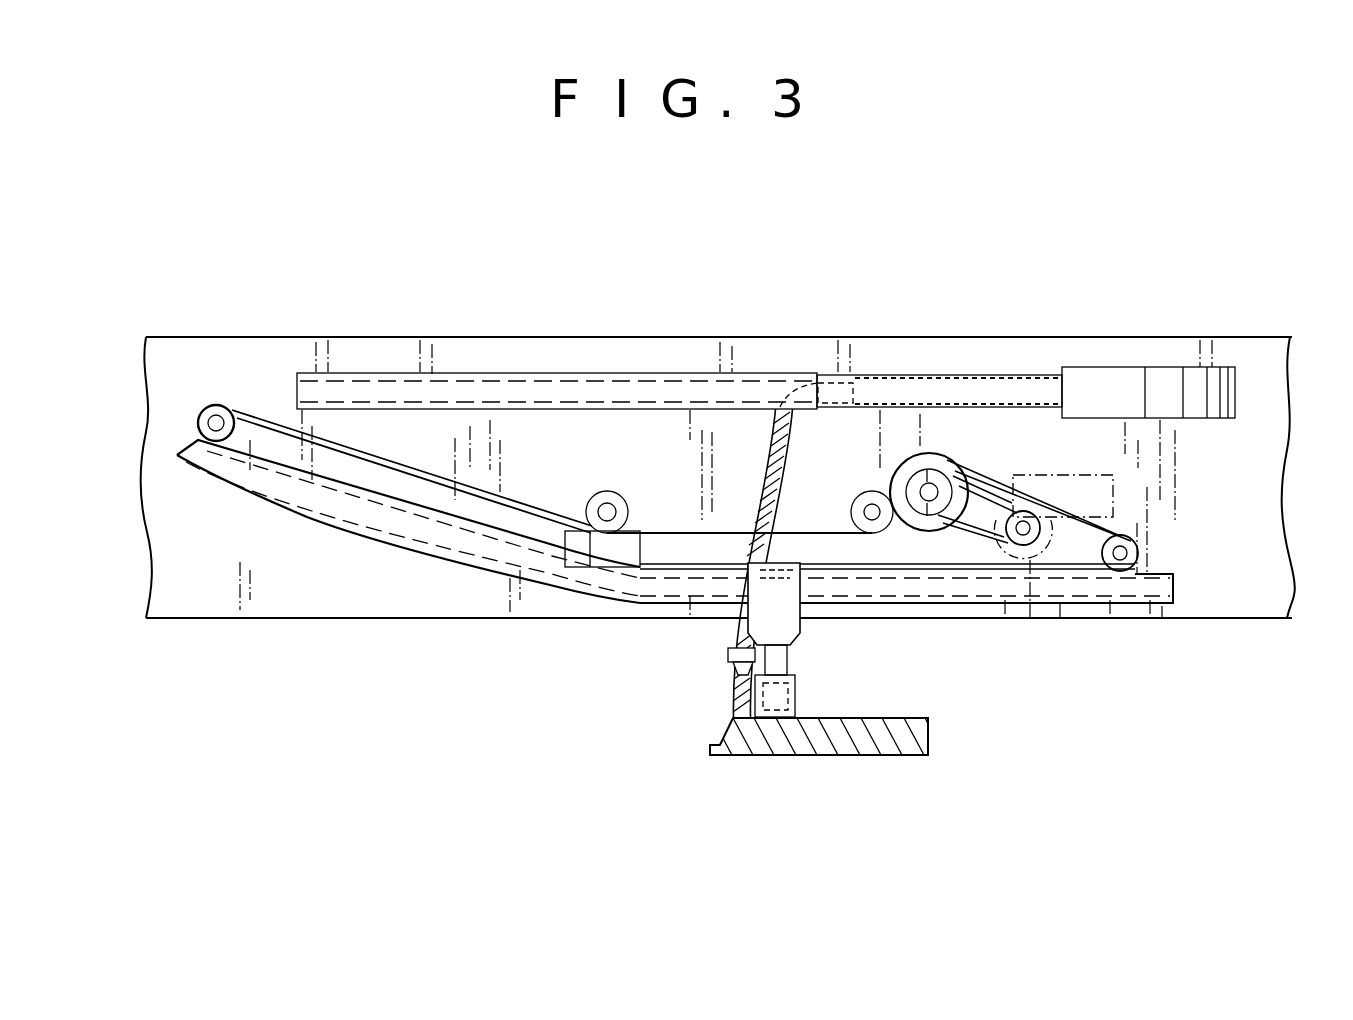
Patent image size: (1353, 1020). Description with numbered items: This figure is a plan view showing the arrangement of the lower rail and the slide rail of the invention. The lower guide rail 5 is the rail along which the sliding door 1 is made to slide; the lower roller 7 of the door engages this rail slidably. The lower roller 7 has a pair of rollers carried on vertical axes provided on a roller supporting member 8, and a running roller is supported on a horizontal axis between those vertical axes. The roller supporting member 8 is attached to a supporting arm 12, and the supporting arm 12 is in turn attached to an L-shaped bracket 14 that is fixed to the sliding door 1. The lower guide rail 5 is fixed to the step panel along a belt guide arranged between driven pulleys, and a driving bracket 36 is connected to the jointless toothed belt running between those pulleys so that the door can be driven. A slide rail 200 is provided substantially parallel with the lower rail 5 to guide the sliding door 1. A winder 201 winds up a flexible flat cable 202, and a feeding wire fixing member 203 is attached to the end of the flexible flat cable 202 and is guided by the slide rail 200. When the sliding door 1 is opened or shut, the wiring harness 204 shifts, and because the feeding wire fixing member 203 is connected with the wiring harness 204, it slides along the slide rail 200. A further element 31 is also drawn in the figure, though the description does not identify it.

The sliding door 1 is at (803, 750).
The lower guide rail 5 is at (398, 548).
The lower roller 7 is at (808, 653).
The roller supporting member 8 is at (733, 630).
The supporting arm 12 is at (747, 675).
The L-shaped bracket 14 is at (797, 700).
The tension roller position 31 is at (1115, 508).
The driving bracket 36 is at (777, 563).
The slide rail 200 is at (390, 373).
The winder 201 is at (1122, 380).
The flexible flat cable 202 is at (943, 377).
The feeding wire fixing member 203 is at (840, 377).
The wiring harness 204 is at (772, 458).